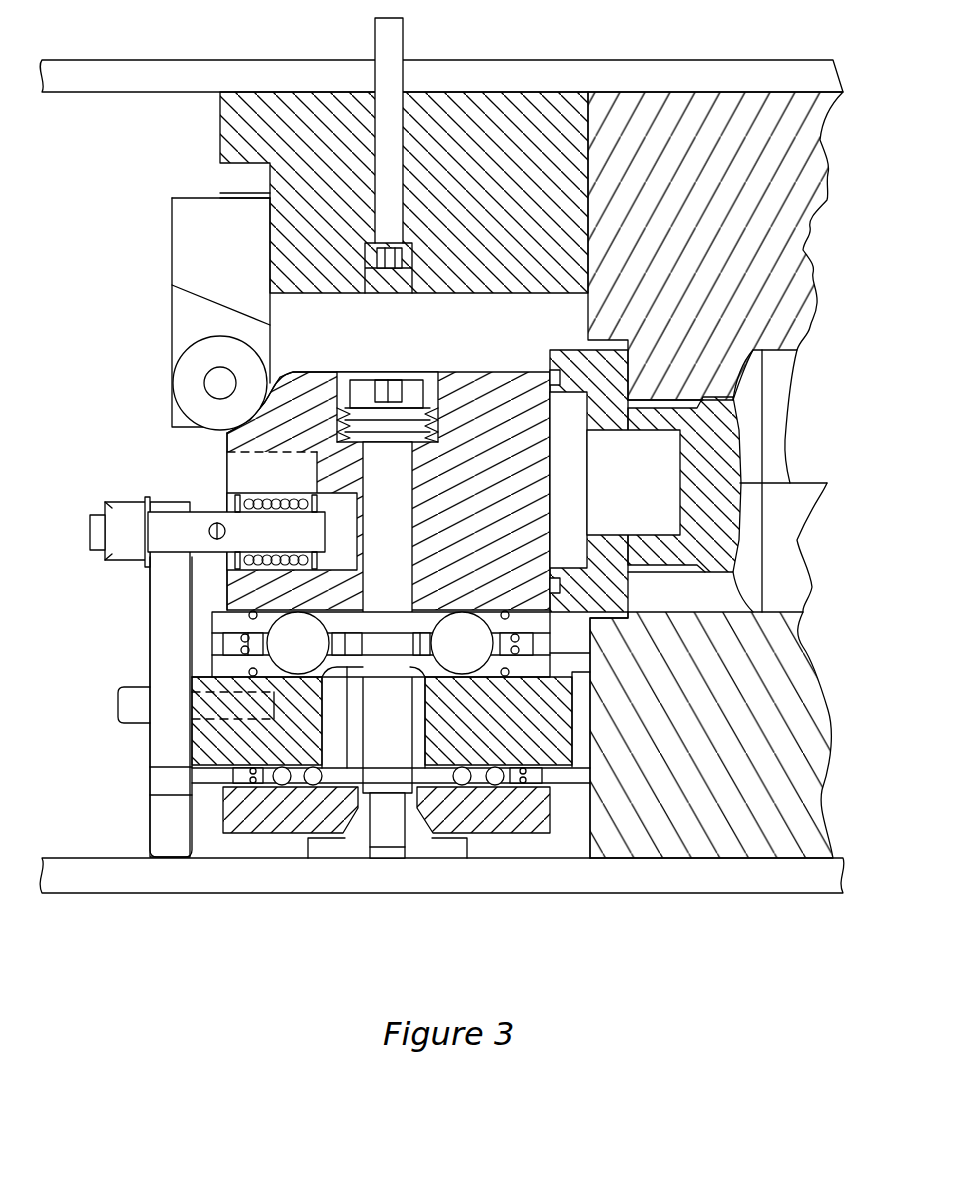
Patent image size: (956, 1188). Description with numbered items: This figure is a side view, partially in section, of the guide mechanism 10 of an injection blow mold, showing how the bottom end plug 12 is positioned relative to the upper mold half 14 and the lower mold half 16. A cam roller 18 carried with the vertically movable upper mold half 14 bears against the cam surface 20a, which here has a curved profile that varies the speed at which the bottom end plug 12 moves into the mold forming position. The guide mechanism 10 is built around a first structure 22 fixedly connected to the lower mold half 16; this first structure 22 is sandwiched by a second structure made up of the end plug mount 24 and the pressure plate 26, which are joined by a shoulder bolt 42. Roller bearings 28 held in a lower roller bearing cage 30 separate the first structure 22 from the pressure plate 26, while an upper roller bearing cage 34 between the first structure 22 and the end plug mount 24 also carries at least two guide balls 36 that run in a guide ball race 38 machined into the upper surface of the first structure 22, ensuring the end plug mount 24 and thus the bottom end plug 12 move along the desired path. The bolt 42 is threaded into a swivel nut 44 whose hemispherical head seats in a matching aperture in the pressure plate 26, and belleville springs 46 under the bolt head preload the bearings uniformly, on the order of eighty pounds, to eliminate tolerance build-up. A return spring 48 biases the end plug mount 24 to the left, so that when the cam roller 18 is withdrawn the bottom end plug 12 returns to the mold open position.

The guide mechanism 10 is at (180, 461).
The bottom end plug 12 is at (707, 467).
The upper mold half 14 is at (778, 236).
The lower mold half 16 is at (805, 725).
The cam roller 18 is at (172, 381).
The cam surface 20a is at (272, 382).
The first structure 22 is at (220, 743).
The end plug mount 24 is at (500, 395).
The pressure plate 26 is at (512, 815).
The roller bearings 28 is at (313, 785).
The lower roller bearing cage 30 is at (233, 777).
The upper roller bearing cage 34 is at (227, 642).
The guide balls 36 is at (287, 654).
The guide ball race 38 is at (202, 665).
The bolt 42 is at (392, 487).
The swivel nut 44 is at (345, 852).
The belleville springs 46 is at (341, 407).
The return spring 48 is at (280, 493).